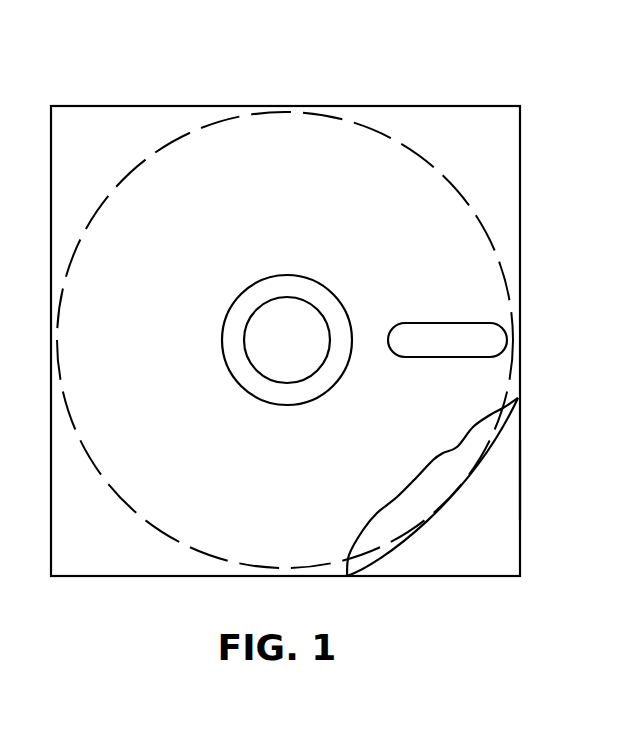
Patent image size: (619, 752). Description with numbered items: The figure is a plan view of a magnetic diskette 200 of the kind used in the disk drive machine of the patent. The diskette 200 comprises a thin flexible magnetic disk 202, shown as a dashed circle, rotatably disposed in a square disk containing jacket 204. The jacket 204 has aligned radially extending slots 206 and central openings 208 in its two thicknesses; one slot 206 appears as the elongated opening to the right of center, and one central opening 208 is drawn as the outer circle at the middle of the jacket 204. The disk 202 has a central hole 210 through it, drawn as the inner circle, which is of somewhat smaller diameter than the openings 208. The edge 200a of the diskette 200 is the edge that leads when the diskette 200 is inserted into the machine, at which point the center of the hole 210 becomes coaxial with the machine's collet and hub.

The magnetic diskette 200 is at (147, 94).
The edge 200a is at (520, 480).
The flexible magnetic disk 202 is at (424, 526).
The disk containing jacket 204 is at (441, 112).
The radially extending slots 206 is at (479, 322).
The central openings 208 is at (261, 279).
The central hole 210 is at (316, 308).